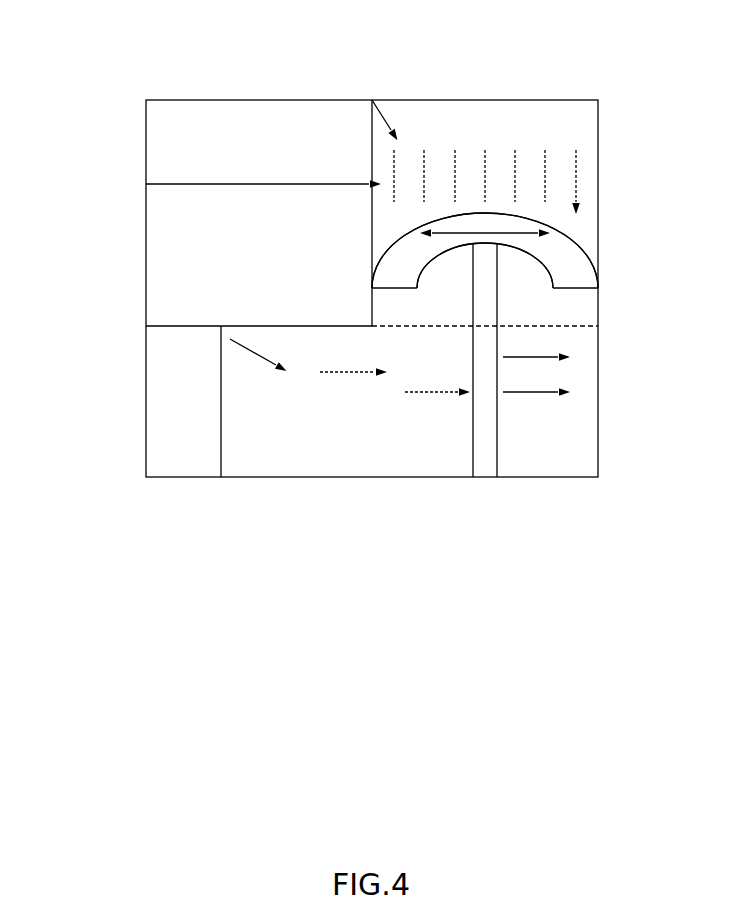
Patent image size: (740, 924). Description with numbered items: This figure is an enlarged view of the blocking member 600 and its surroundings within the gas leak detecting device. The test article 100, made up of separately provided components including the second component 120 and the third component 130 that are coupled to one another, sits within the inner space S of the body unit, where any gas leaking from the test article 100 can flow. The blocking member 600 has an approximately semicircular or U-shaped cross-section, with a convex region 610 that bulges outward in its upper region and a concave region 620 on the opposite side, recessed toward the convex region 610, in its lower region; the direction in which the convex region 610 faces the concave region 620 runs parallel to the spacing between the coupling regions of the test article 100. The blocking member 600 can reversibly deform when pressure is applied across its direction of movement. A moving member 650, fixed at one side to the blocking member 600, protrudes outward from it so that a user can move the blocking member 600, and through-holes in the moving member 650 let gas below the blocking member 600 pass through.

The test article 100 is at (118, 281).
The second component 120 is at (261, 135).
The third component 130 is at (182, 442).
The inner space S is at (311, 433).
The blocking member 600 is at (581, 233).
The convex region 610 is at (528, 218).
The concave region 620 is at (521, 252).
The moving member 650 is at (488, 453).